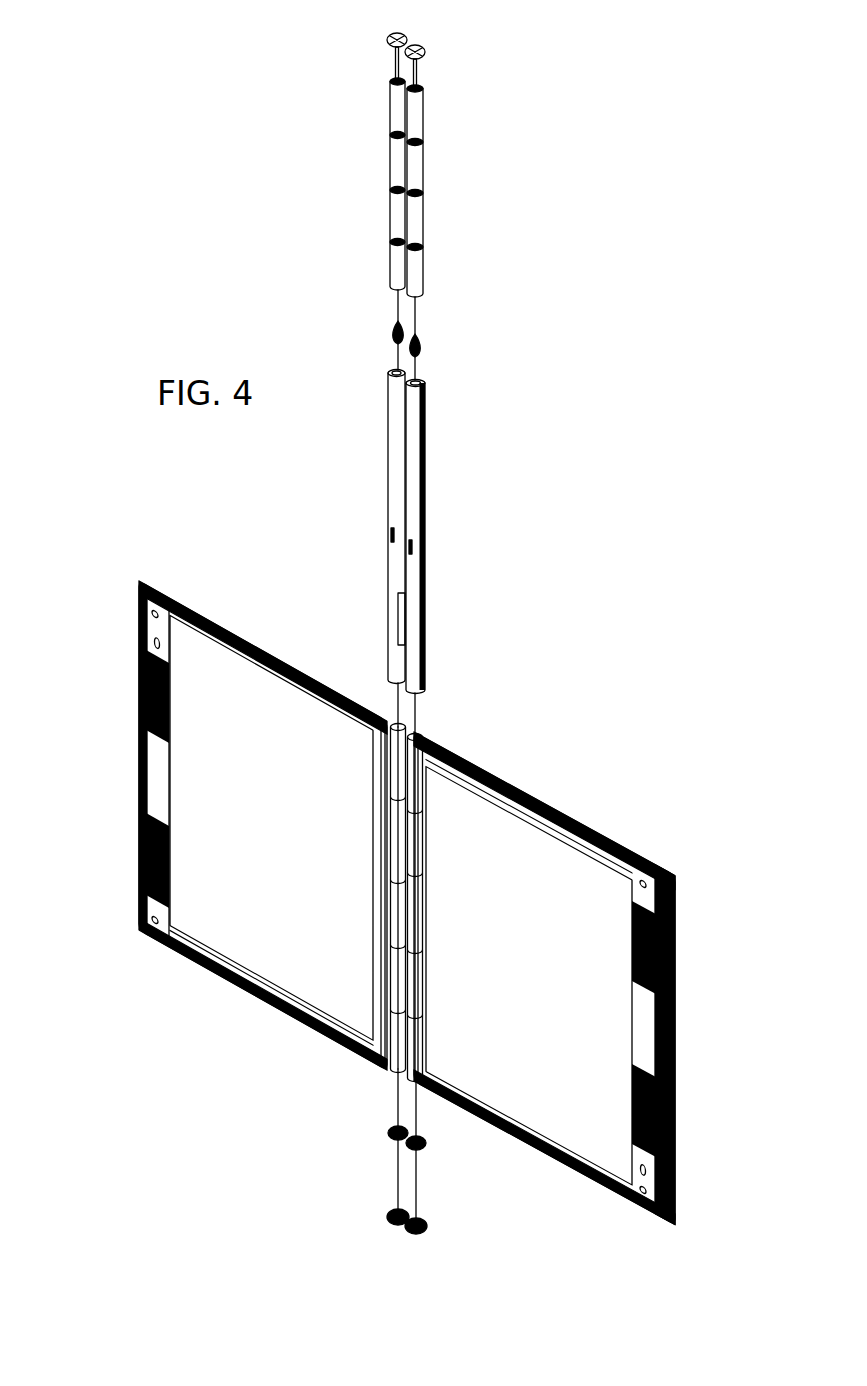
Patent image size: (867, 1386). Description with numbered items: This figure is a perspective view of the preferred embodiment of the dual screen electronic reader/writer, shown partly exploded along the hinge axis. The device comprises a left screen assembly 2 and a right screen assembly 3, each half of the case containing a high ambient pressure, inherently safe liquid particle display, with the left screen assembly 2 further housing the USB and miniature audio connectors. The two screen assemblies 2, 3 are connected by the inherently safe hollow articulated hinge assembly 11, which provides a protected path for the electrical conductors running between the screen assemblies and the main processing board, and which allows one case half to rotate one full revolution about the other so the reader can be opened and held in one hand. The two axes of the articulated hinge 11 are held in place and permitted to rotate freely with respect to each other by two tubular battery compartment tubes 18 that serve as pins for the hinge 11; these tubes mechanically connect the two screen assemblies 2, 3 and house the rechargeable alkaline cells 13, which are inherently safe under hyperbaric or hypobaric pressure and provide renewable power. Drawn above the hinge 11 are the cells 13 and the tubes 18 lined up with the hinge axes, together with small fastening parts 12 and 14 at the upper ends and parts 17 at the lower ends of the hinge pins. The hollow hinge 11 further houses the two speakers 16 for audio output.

The left screen assembly 2 is at (208, 816).
The right screen assembly 3 is at (612, 840).
The hollow articulated hinge assembly 11 is at (352, 822).
The screw 12 is at (449, 50).
The rechargeable alkaline cells 13 is at (449, 187).
The pin 14 is at (460, 330).
The speakers 16 is at (355, 1099).
The nut 17 is at (356, 1181).
The tubular battery compartment tubes 18 is at (459, 532).